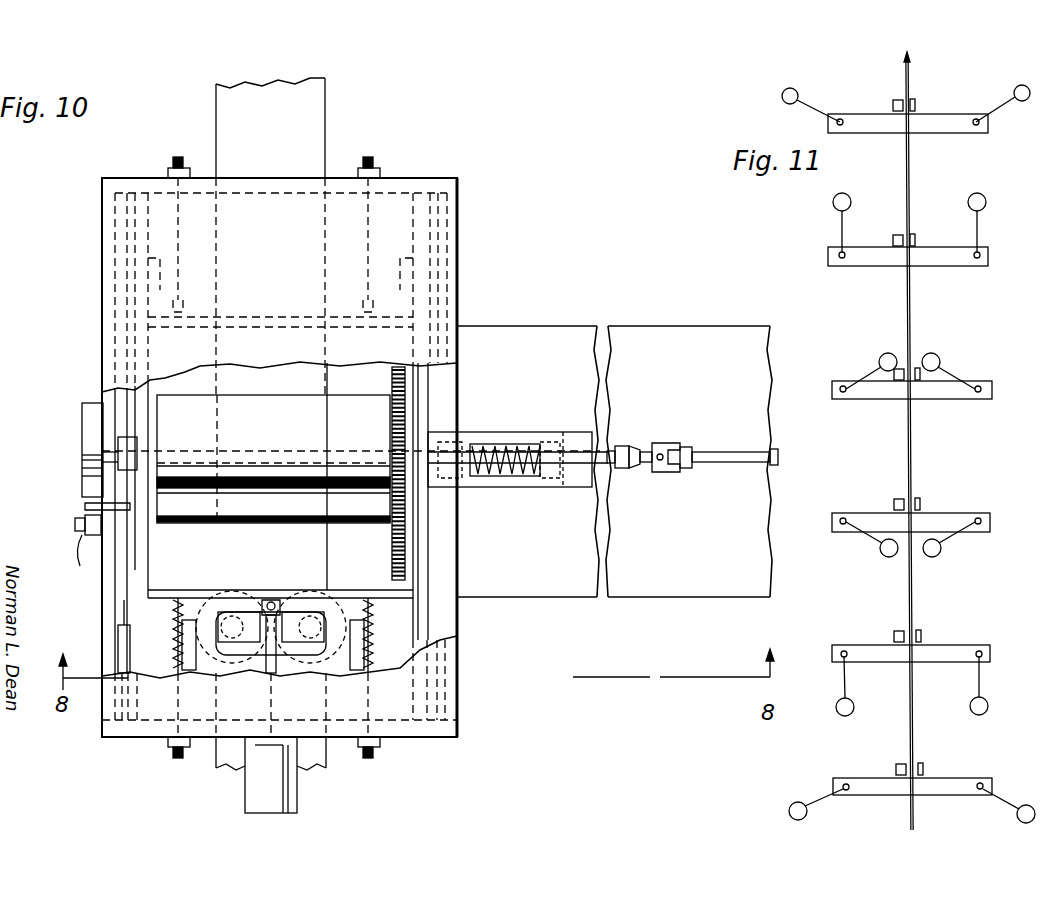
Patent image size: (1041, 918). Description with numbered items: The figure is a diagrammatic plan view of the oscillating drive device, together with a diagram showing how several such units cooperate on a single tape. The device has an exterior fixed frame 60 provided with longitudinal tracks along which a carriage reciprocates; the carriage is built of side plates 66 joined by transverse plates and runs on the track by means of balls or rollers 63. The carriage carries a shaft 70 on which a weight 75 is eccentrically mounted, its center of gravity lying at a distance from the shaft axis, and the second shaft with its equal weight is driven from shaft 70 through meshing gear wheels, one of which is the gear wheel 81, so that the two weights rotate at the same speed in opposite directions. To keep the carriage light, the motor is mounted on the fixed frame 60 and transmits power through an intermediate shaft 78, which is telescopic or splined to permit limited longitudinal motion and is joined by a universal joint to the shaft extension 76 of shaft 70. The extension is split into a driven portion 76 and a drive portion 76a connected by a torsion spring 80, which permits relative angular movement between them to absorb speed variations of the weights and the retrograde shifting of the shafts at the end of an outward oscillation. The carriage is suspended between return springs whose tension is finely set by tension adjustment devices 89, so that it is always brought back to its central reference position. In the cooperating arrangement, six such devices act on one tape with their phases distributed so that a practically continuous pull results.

The exterior fixed frame 60 is at (459, 279).
The balls or rollers 63 is at (120, 640).
The side plates 66 is at (423, 412).
The shaft 70 is at (110, 456).
The weight 75 is at (352, 523).
The shaft extension 76 is at (463, 478).
The drive portion of shaft extension 76a is at (583, 470).
The intermediate shaft 78 is at (713, 453).
The torsion spring 80 is at (520, 446).
The gear wheel 81 is at (392, 565).
The tension adjustment devices 89 is at (174, 758).